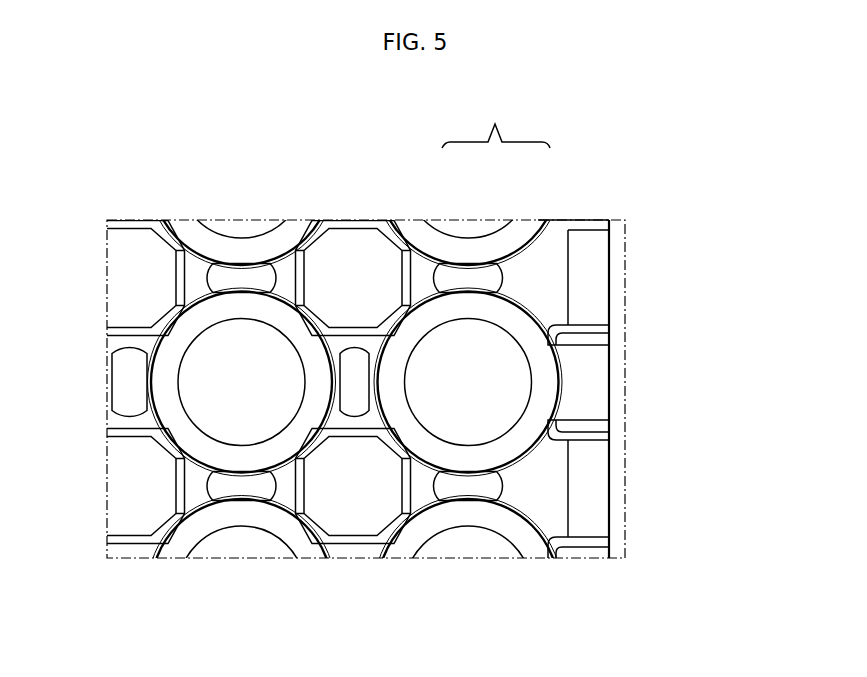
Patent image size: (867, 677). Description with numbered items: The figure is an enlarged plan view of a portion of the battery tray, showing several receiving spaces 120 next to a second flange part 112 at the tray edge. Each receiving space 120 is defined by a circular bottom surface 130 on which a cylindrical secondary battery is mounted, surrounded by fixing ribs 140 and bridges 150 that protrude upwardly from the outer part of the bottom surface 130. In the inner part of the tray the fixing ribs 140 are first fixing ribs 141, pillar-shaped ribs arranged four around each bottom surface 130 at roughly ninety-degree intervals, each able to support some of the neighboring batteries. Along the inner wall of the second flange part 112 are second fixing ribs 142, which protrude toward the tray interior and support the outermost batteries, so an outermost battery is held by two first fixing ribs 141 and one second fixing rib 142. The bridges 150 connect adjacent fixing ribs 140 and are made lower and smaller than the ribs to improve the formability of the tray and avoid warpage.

The second flange part 112 is at (615, 274).
The receiving space 120 is at (481, 369).
The bottom surface 130 is at (466, 433).
The fixing ribs 140 is at (496, 122).
The first fixing rib 141 is at (377, 255).
The second fixing rib 142 is at (590, 357).
The bridge 150 is at (350, 373).